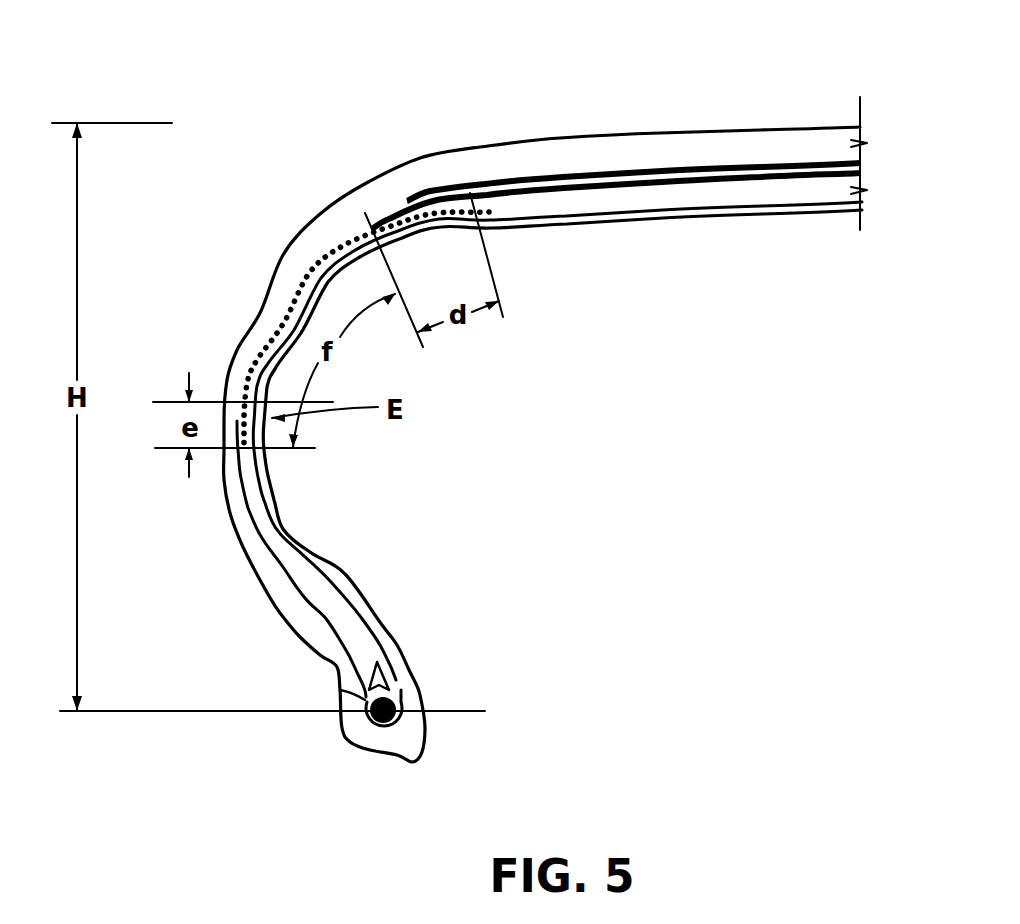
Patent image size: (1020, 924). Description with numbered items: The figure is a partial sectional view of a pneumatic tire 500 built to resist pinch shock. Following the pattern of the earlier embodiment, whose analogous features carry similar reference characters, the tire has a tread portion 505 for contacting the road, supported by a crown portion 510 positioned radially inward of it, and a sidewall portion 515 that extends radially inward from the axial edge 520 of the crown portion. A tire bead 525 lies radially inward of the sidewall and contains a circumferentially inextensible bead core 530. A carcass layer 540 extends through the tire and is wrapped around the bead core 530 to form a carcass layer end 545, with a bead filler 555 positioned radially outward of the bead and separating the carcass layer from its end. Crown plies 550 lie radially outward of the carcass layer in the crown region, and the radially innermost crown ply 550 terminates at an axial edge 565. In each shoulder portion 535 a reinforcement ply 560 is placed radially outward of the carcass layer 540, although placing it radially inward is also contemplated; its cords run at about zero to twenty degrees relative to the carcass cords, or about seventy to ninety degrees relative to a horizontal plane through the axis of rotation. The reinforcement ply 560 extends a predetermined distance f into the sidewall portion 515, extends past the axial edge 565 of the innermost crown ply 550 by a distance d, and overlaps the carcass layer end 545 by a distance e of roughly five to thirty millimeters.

The tire 500 is at (640, 436).
The tire casing 505 is at (597, 130).
The tread 510 is at (517, 163).
The sidewall portion 515 is at (240, 505).
The crown region 520 is at (438, 108).
The bead core 525 is at (402, 735).
The bead core 530 is at (337, 667).
The shoulder portion 535 is at (348, 160).
The carcass layer 540 is at (282, 530).
The carcass layer end 545 is at (287, 570).
The crown ply 550 is at (805, 170).
The bead apex 555 is at (392, 680).
The reinforcement ply 560 is at (297, 307).
The axial edge 565 is at (363, 223).